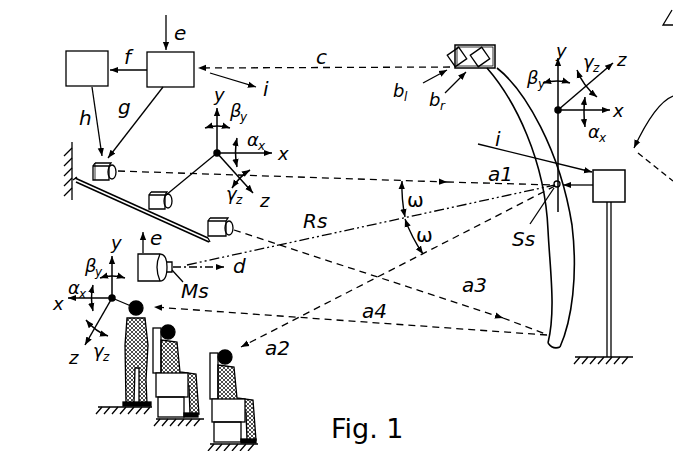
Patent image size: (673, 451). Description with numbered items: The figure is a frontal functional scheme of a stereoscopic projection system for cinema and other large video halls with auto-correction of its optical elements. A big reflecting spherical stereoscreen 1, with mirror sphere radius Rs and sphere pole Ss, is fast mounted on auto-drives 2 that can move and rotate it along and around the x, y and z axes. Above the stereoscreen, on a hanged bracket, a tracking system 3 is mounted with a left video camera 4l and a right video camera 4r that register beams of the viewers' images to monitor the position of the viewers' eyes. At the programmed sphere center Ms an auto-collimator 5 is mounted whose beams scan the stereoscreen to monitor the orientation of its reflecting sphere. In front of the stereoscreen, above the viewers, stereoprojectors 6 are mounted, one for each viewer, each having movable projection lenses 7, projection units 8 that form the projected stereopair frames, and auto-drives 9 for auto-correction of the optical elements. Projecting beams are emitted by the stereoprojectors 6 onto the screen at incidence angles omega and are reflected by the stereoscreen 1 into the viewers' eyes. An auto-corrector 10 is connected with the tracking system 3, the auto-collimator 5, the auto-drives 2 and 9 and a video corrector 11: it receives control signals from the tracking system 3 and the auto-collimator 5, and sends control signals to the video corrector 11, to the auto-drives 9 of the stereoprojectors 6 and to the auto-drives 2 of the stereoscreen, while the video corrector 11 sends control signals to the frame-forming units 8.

The reflecting spherical stereoscreen 1 is at (552, 346).
The auto-drives 2 is at (598, 267).
The tracking system 3 is at (474, 45).
The left video camera 4l is at (456, 52).
The right video camera 4r is at (487, 50).
The auto-collimator 5 is at (155, 267).
The stereoprojectors 6 is at (114, 164).
The movable projection lenses 7 is at (159, 193).
The projection units 8 is at (220, 227).
The auto-drives 9 is at (147, 210).
The auto-corrector 10 is at (170, 69).
The video corrector 11 is at (87, 68).